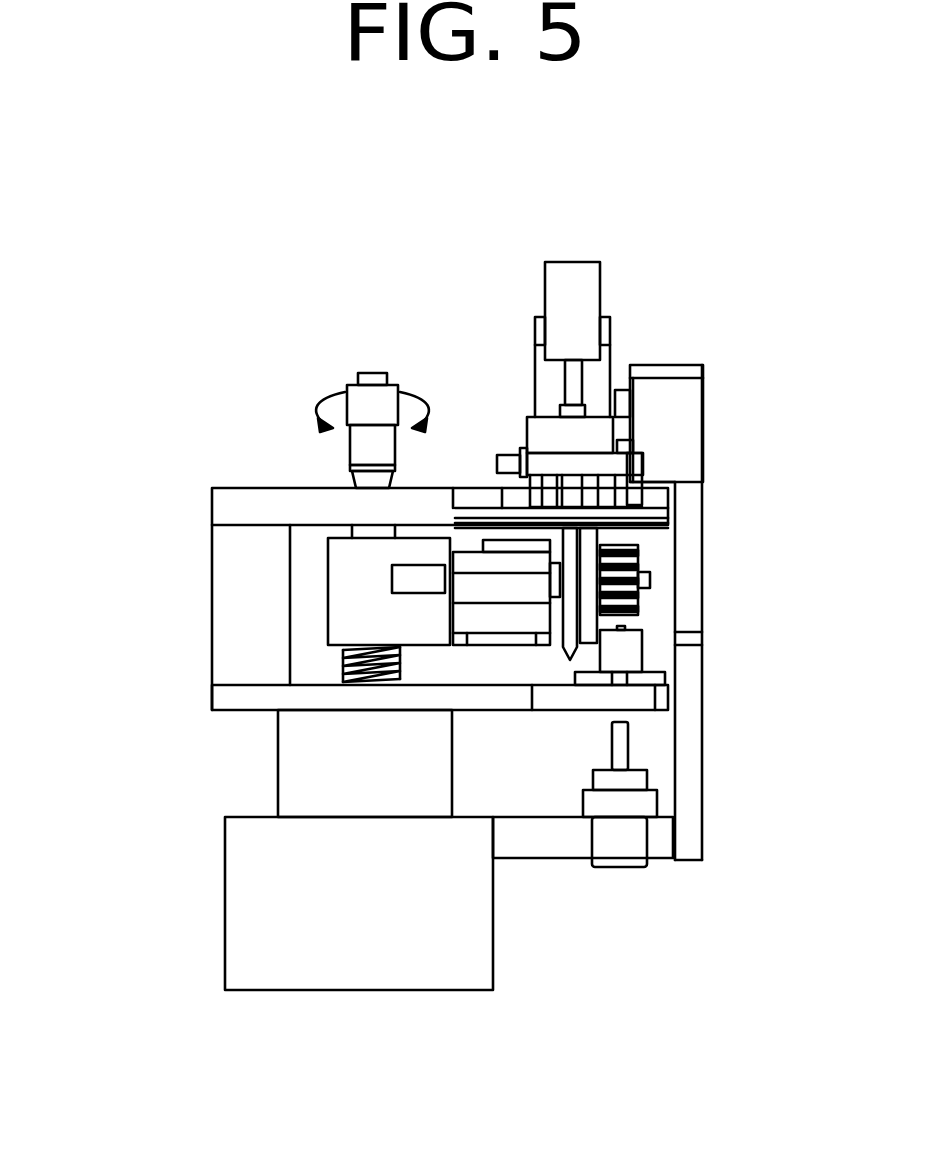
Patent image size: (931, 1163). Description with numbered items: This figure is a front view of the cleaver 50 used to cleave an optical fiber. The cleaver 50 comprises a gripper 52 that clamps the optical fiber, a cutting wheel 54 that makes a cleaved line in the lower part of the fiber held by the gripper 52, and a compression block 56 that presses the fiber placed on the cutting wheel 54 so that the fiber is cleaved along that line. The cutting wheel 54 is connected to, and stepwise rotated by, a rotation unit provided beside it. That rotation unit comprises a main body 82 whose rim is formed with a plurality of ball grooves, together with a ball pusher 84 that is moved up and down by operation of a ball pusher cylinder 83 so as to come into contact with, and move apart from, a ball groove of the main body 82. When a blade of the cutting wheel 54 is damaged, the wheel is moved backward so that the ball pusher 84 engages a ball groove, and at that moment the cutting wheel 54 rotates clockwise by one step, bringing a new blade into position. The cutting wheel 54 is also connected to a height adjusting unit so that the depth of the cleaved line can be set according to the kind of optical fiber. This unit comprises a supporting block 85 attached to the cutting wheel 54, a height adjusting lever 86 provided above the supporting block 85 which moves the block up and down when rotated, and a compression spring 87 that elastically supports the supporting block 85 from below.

The cleaver 50 is at (82, 322).
The gripper 52 is at (532, 488).
The cutting wheel 54 is at (600, 542).
The compression block 56 is at (573, 483).
The main body 82 is at (632, 568).
The ball pusher cylinder 83 is at (636, 832).
The ball pusher 84 is at (620, 628).
The supporting block 85 is at (328, 597).
The height adjusting lever 86 is at (355, 395).
The compression spring 87 is at (345, 665).